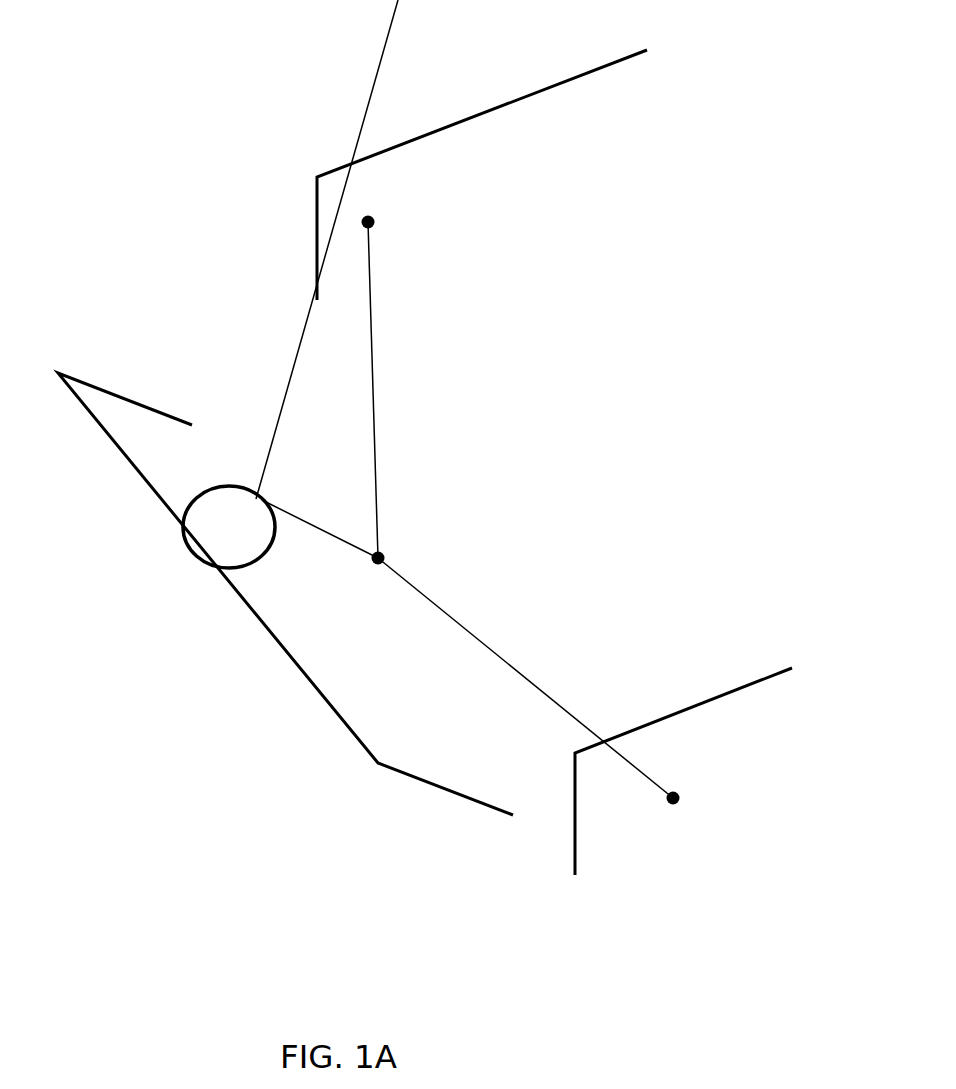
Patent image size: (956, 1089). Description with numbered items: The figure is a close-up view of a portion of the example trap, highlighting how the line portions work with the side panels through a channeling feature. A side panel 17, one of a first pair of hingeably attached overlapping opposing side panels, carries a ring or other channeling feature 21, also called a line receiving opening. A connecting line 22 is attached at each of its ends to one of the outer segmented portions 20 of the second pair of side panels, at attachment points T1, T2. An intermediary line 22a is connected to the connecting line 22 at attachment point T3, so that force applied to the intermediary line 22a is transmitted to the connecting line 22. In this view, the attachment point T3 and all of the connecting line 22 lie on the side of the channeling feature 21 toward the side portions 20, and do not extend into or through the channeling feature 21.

The side panel 17 is at (120, 392).
The outer segmented portion 20 is at (537, 93).
The channeling feature 21 is at (197, 558).
The connecting line 22 is at (373, 373).
The intermediary line 22a is at (368, 103).
The attachment point T1 is at (368, 222).
The attachment point T2 is at (673, 798).
The attachment point T3 is at (378, 558).